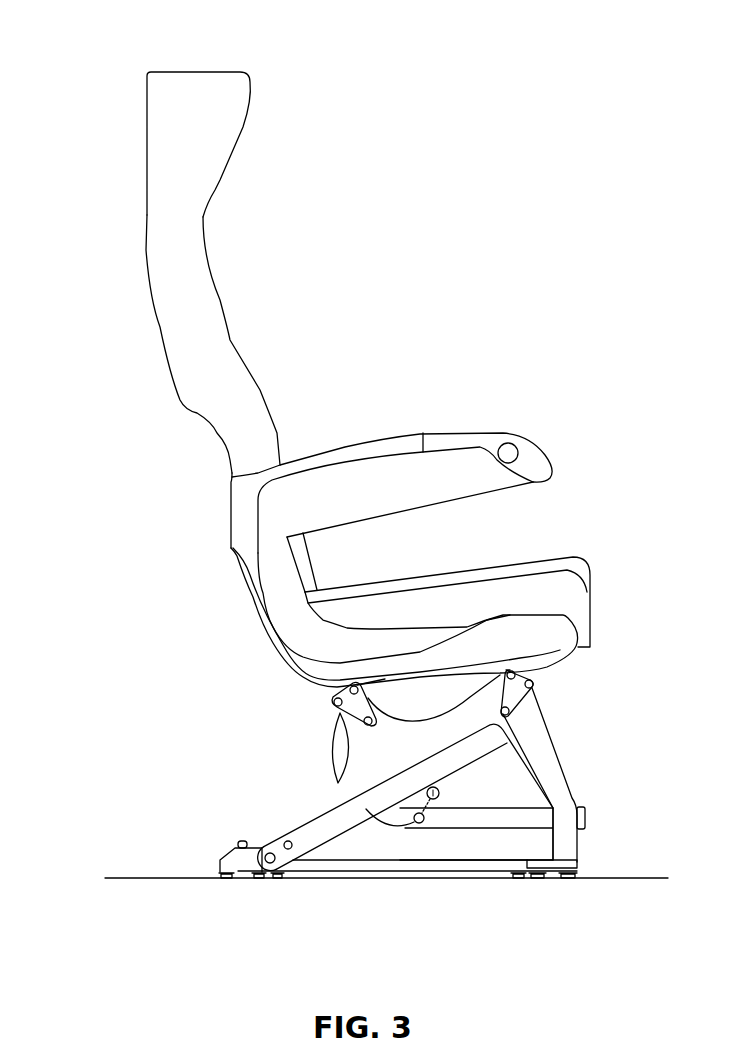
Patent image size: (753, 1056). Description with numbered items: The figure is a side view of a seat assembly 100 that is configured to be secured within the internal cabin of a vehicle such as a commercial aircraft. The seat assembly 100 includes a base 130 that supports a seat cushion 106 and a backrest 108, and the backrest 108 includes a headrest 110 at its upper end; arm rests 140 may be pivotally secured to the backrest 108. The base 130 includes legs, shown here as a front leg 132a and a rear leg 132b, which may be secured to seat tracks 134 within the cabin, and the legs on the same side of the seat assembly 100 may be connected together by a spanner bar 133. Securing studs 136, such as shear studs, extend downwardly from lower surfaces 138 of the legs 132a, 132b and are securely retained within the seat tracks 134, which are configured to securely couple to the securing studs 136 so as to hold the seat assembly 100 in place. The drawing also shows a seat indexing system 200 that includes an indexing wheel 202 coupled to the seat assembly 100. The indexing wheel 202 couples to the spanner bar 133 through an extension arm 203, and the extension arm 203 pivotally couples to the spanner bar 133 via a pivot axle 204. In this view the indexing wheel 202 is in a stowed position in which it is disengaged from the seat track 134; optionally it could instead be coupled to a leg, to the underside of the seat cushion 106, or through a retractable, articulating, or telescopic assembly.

The seat assembly 100 is at (126, 70).
The seat cushion 106 is at (577, 553).
The backrest 108 is at (147, 213).
The headrest 110 is at (217, 187).
The arm rests 140 is at (458, 430).
The base 130 is at (333, 792).
The spanner bar 133 is at (527, 807).
The leg 132a is at (222, 858).
The leg 132b is at (578, 843).
The seat tracks 134 is at (303, 880).
The securing studs 136 is at (597, 918).
The lower surfaces 138 is at (243, 842).
The seat indexing system 200 is at (450, 786).
The indexing wheel 202 is at (440, 786).
The extension arm 203 is at (425, 822).
The pivot axle 204 is at (420, 823).